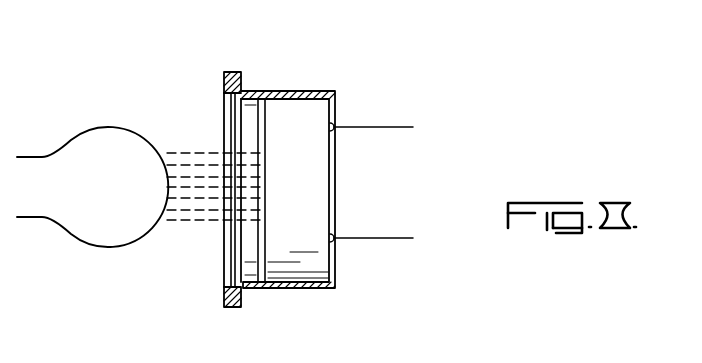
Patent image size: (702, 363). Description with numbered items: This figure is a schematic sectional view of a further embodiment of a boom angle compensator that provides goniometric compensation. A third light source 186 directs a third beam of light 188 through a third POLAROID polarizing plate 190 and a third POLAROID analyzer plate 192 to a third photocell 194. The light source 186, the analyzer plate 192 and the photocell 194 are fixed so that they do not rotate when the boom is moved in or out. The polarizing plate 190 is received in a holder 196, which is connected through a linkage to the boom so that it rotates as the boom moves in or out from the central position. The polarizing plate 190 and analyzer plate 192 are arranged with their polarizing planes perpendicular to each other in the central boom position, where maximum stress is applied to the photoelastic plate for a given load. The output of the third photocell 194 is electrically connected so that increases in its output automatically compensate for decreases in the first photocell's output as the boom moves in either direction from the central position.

The third light source 186 is at (107, 132).
The third beam of light 188 is at (202, 189).
The third POLAROID polarizing plate 190 is at (235, 260).
The third POLAROID analyzer plate 192 is at (268, 108).
The third photocell 194 is at (315, 108).
The holder 196 is at (226, 80).